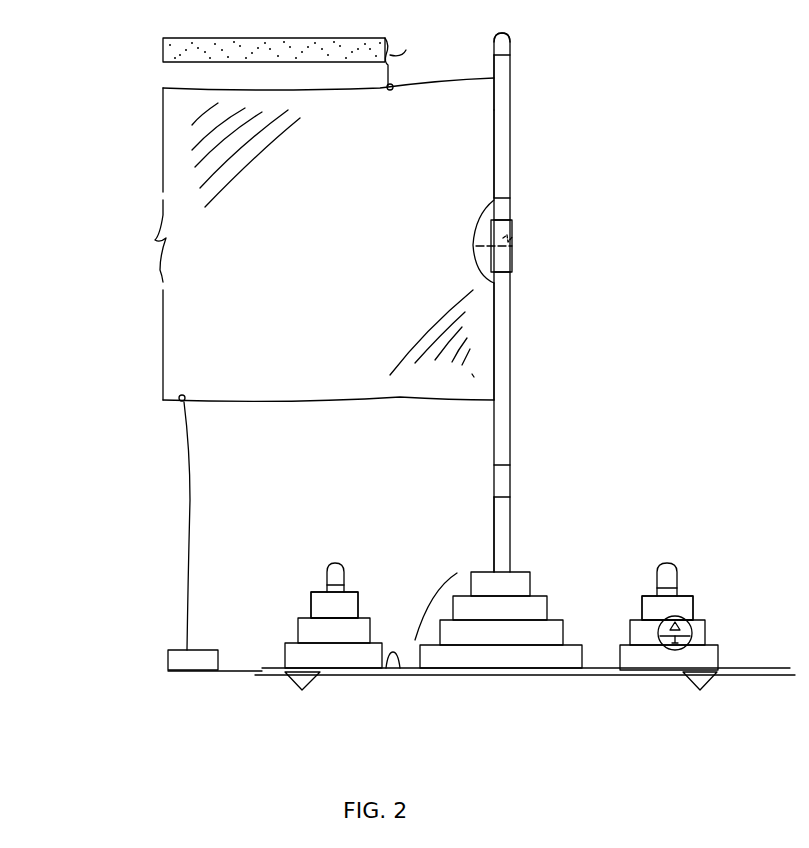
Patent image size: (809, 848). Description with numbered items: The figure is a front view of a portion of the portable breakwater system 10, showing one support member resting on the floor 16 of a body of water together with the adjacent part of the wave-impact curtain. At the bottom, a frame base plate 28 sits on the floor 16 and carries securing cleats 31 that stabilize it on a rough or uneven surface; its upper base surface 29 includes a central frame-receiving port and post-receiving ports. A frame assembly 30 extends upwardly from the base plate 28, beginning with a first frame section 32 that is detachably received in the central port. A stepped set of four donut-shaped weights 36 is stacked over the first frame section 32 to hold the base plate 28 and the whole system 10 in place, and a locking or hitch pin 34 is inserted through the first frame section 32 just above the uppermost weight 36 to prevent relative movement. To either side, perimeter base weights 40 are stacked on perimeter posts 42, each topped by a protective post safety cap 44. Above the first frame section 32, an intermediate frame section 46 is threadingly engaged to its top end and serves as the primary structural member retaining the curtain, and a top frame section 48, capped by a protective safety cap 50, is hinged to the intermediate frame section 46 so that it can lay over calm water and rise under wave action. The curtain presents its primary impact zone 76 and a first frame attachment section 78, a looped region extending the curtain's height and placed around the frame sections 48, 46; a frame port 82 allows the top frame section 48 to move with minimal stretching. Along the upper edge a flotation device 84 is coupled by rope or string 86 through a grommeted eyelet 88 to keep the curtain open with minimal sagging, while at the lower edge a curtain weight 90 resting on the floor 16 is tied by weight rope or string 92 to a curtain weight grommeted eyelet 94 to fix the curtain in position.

The portable breakwater system 10 is at (113, 130).
The floor 16 is at (608, 677).
The frame base plate 28 is at (262, 668).
The upper base surface 29 is at (386, 675).
The frame assembly 30 is at (514, 437).
The securing cleat 31 is at (291, 682).
The first frame section 32 is at (512, 532).
The hitch pin 34 is at (505, 572).
The weights 36 is at (425, 613).
The perimeter base weight 40 is at (303, 598).
The perimeter post 42 is at (320, 590).
The post safety cap 44 is at (330, 565).
The intermediate frame section 46 is at (512, 320).
The top frame section 48 is at (493, 103).
The safety cap 50 is at (511, 24).
The primary impact zone 76 is at (268, 329).
The first frame attachment section 78 is at (478, 170).
The frame port 82 is at (473, 228).
The flotation device 84 is at (238, 40).
The rope or string 86 is at (438, 25).
The grommeted eyelet 88 is at (393, 88).
The curtain weight 90 is at (168, 658).
The weight rope or string 92 is at (188, 522).
The curtain weight grommeted eyelet 94 is at (179, 398).